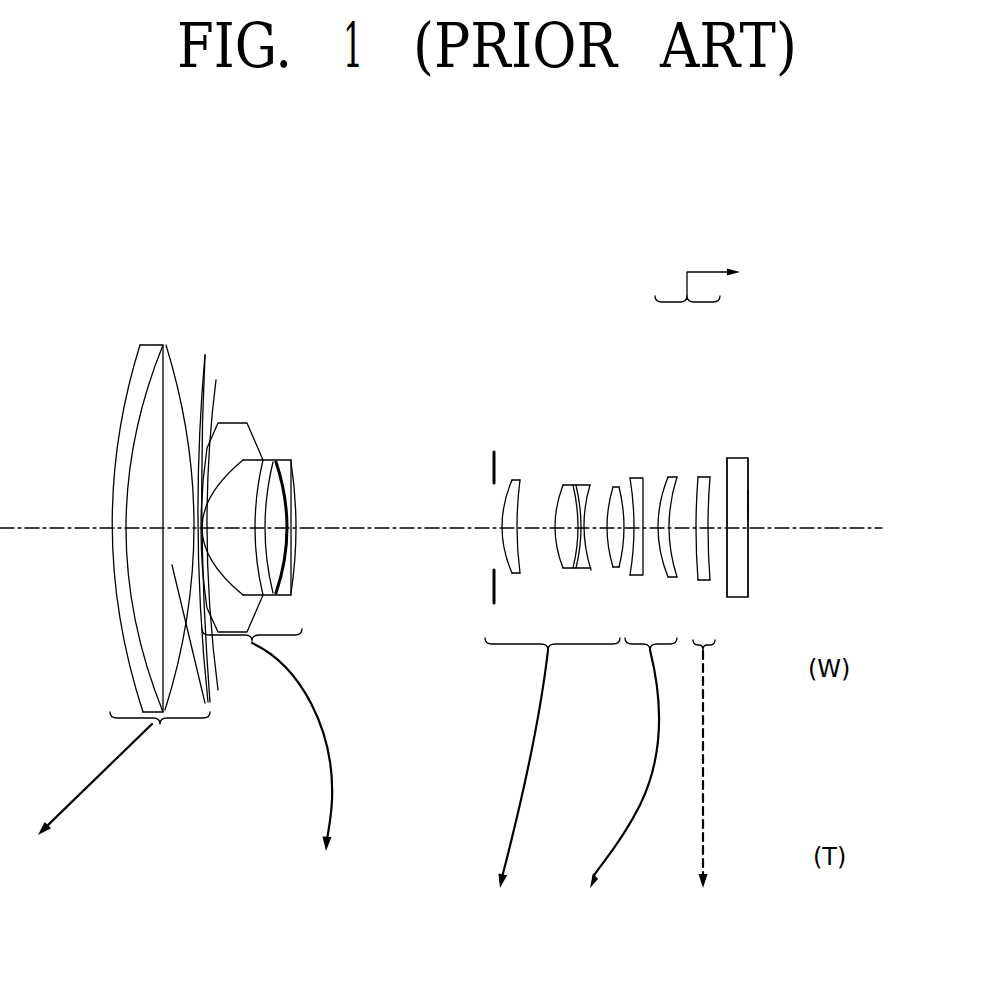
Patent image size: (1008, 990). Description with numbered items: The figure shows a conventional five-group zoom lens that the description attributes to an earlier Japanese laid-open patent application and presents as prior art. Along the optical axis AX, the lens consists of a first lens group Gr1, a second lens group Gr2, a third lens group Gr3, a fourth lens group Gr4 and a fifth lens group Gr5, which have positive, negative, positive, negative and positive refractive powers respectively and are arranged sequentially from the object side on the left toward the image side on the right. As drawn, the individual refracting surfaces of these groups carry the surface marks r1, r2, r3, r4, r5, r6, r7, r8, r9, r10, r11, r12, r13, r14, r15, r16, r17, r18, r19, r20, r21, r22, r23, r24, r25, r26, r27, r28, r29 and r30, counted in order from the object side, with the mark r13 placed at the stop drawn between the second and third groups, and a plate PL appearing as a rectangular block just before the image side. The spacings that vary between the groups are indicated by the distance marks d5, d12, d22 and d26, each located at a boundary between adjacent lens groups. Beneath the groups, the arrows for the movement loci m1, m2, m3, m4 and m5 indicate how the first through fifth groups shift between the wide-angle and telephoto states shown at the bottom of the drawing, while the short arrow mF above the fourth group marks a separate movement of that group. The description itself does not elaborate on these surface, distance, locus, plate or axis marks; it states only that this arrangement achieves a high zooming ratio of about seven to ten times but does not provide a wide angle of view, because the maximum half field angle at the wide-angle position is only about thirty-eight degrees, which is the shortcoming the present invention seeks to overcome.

The first lens surface r1 is at (118, 442).
The second lens surface r2 is at (138, 415).
The third lens surface r3 is at (166, 345).
The fourth lens surface r4 is at (199, 383).
The fifth lens surface r5 is at (212, 373).
The sixth lens surface r6 is at (214, 433).
The seventh lens surface r7 is at (240, 423).
The eighth lens surface r8 is at (262, 457).
The ninth lens surface r9 is at (286, 458).
The tenth lens surface r10 is at (293, 483).
The eleventh lens surface r11 is at (295, 498).
The twelfth lens surface r12 is at (297, 507).
The aperture stop (ST) r13 is at (493, 452).
The fourteenth lens surface r14 is at (500, 503).
The fifteenth lens surface r15 is at (512, 481).
The sixteenth lens surface r16 is at (562, 485).
The seventeenth lens surface r17 is at (575, 485).
The eighteenth lens surface r18 is at (585, 485).
The nineteenth lens surface r19 is at (598, 487).
The twentieth lens surface r20 is at (610, 487).
The twenty-first lens surface r21 is at (632, 480).
The twenty-second lens surface r22 is at (645, 480).
The twenty-third lens surface r23 is at (660, 477).
The twenty-fourth lens surface r24 is at (672, 477).
The twenty-fifth lens surface r25 is at (705, 477).
The twenty-sixth lens surface r26 is at (712, 477).
The twenty-seventh lens surface r27 is at (727, 462).
The twenty-eighth lens surface r28 is at (750, 490).
The twenty-ninth lens surface r29 is at (750, 500).
The thirtieth lens surface r30 is at (750, 512).
The variable axial distance d5 is at (192, 560).
The variable axial distance d12 is at (402, 535).
The variable axial distance d22 is at (612, 575).
The variable axial distance d26 is at (690, 532).
The first lens group Gr1 is at (160, 737).
The second lens group Gr2 is at (252, 655).
The third lens group Gr3 is at (552, 660).
The fourth lens group Gr4 is at (660, 472).
The fifth lens group Gr5 is at (723, 662).
The movement locus of first lens group m1 is at (98, 778).
The movement locus of second lens group m2 is at (330, 737).
The movement locus of third lens group m3 is at (523, 770).
The movement locus of fourth lens group m4 is at (647, 778).
The movement locus of fifth lens group m5 is at (705, 770).
The focusing movement of fourth lens group mF is at (711, 267).
The plane parallel plate (filter) PL is at (740, 598).
The optical axis AX is at (862, 540).